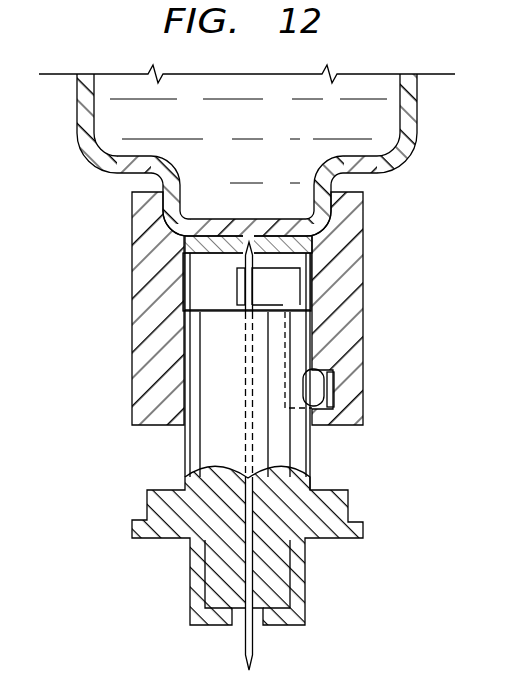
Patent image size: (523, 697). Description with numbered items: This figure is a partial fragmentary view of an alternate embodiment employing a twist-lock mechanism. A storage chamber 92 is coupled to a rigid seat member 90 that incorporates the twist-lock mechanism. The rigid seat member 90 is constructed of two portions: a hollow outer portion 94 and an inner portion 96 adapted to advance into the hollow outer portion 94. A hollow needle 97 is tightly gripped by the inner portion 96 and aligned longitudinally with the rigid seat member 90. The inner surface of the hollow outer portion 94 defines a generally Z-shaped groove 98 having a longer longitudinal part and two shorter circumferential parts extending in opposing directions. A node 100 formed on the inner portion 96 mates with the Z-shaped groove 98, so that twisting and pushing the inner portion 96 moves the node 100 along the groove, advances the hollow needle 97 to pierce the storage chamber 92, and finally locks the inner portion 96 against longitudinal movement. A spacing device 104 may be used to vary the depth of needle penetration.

The rigid seat member 90 is at (86, 250).
The storage chamber 92 is at (418, 143).
The hollow outer portion 94 is at (350, 246).
The portion 96 is at (183, 446).
The hollow needle 97 is at (247, 419).
The Z-shaped groove 98 is at (237, 289).
The node 100 is at (316, 383).
The spacing device 104 is at (346, 540).